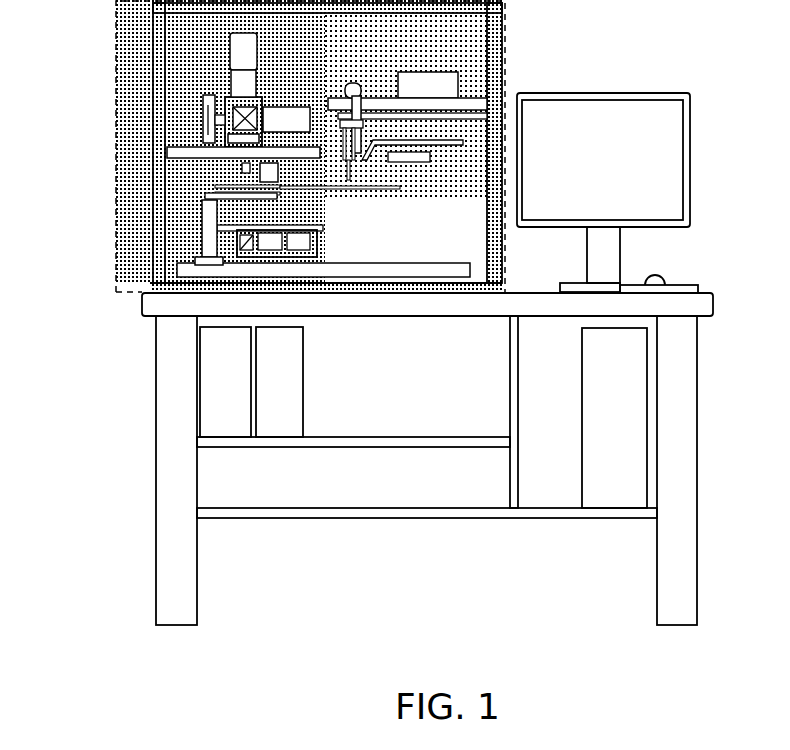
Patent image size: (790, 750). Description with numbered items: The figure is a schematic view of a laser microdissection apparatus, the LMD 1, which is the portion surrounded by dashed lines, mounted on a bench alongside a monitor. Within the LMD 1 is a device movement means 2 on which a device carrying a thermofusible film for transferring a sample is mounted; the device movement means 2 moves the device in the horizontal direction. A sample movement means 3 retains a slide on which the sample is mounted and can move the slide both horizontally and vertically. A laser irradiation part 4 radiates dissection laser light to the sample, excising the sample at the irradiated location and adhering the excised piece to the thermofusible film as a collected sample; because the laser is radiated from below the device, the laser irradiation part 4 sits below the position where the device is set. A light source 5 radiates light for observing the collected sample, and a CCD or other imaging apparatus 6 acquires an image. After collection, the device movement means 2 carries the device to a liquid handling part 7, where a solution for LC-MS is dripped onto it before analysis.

The LMD 1 is at (116, 27).
The device movement means 2 is at (218, 199).
The sample movement means 3 is at (270, 180).
The laser irradiation part 4 is at (258, 251).
The light source 5 is at (231, 80).
The imaging apparatus 6 is at (289, 107).
The liquid handling part 7 is at (371, 97).